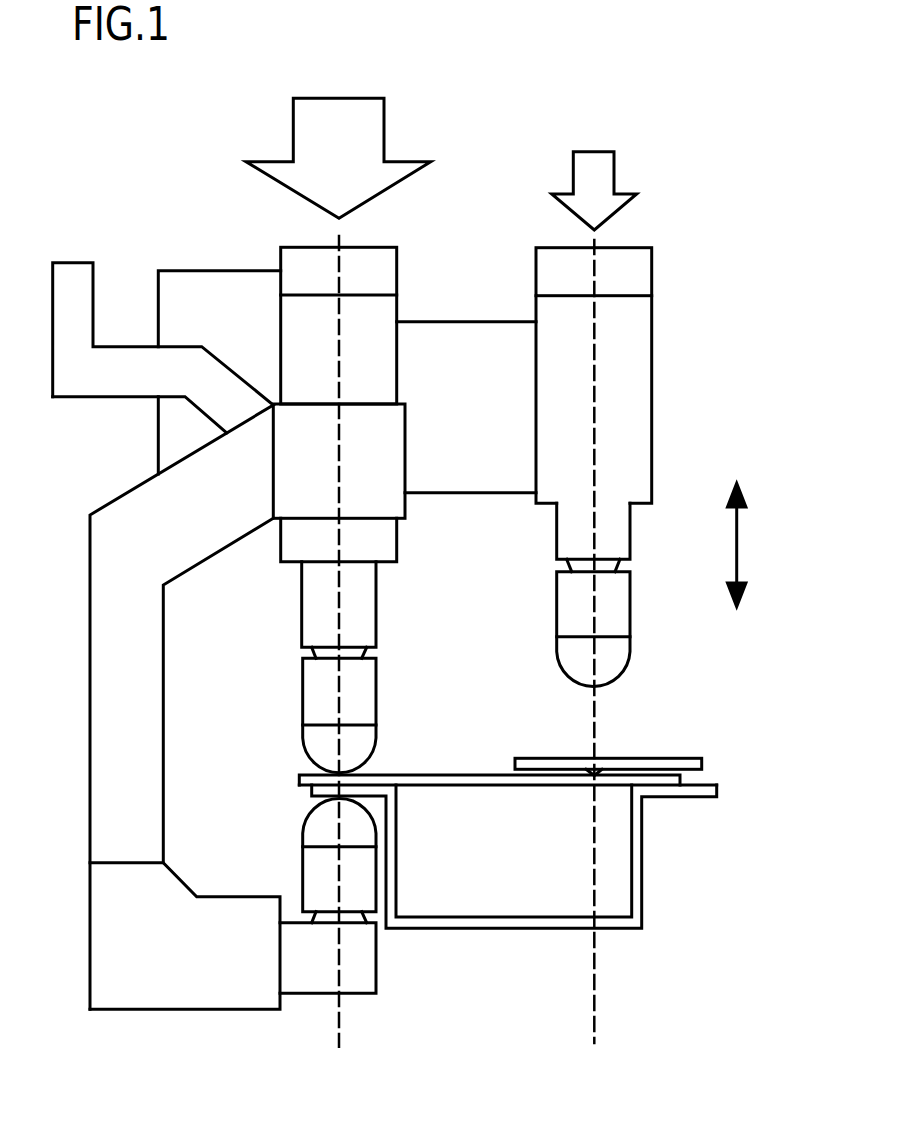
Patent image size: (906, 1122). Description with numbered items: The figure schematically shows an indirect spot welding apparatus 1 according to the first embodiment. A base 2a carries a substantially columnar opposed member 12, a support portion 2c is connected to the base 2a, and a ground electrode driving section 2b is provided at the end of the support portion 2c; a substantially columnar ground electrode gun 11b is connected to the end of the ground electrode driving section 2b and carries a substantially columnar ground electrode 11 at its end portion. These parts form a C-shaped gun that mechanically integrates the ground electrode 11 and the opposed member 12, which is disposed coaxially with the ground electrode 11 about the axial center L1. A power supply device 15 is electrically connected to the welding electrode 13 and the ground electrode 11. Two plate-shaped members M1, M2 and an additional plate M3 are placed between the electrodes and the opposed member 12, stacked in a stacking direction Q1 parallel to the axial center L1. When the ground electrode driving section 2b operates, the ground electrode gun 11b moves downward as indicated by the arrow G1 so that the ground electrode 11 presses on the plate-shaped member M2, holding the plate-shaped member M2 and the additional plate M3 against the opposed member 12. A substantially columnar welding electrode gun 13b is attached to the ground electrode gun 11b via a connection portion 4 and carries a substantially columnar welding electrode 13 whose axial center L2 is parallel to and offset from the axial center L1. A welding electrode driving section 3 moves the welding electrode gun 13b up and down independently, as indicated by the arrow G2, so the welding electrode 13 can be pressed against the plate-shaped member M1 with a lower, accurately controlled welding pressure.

The indirect spot welding apparatus 1 is at (640, 230).
The base 2a is at (103, 907).
The ground electrode driving section 2b is at (383, 263).
The support portion 2c is at (102, 682).
The welding electrode driving section 3 is at (638, 275).
The connection portion 4 is at (490, 337).
The ground electrode 11 is at (320, 695).
The ground electrode gun 11b is at (383, 447).
The opposed member 12 is at (320, 872).
The welding electrode 13 is at (557, 610).
The welding electrode gun 13b is at (630, 442).
The power supply device 15 is at (207, 283).
The arrow indicating movement of the ground electrode gun G1 is at (384, 130).
The arrow indicating movement of the welding electrode gun G2 is at (573, 167).
The stacking direction Q1 is at (738, 547).
The plate-shaped member M1 is at (680, 758).
The plate-shaped member M2 is at (548, 787).
The additional plate M3 is at (512, 930).
The axial center L1 is at (339, 1030).
The axial center L2 is at (595, 988).